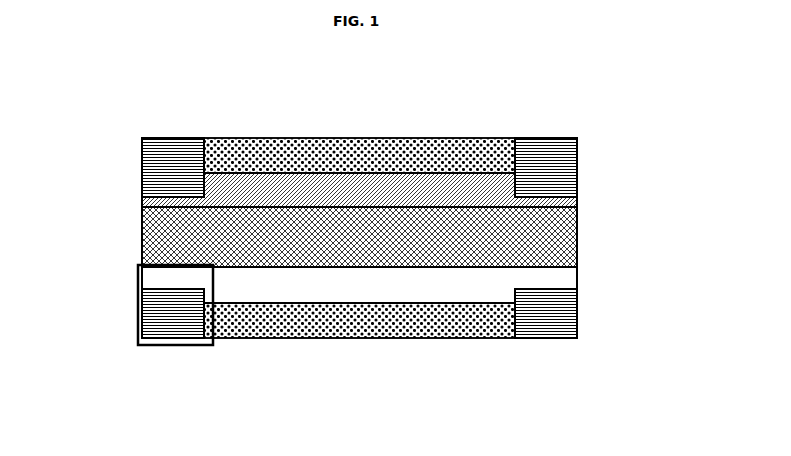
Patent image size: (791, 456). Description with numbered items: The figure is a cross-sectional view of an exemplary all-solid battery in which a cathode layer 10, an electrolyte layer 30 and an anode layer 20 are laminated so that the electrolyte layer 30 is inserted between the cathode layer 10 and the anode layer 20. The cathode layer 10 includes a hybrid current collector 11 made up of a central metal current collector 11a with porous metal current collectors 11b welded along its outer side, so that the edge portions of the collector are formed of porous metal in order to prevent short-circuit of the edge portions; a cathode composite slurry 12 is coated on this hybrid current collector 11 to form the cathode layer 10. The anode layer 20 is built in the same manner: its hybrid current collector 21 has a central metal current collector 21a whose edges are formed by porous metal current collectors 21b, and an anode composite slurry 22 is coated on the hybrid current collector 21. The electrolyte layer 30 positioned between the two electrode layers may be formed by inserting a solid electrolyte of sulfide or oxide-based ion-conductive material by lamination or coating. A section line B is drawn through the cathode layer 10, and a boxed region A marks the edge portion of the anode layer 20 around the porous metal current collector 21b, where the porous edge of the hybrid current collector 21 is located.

The cathode layer 10 is at (366, 128).
The hybrid current collector (cathode side) 11 is at (349, 123).
The metal current collector 11a is at (483, 138).
The porous metal current collector 11b is at (136, 207).
The cathode composite slurry 12 is at (578, 201).
The anode layer 20 is at (372, 341).
The hybrid current collector (anode side) 21 is at (356, 359).
The metal current collector 21a is at (497, 322).
The porous metal current collector 21b is at (178, 323).
The anode composite slurry 22 is at (565, 278).
The electrolyte layer 30 is at (142, 240).
The section A is at (202, 346).
The section line B is at (128, 150).